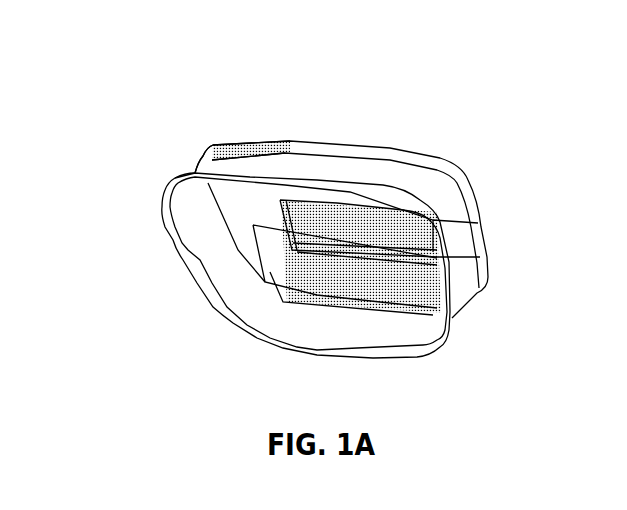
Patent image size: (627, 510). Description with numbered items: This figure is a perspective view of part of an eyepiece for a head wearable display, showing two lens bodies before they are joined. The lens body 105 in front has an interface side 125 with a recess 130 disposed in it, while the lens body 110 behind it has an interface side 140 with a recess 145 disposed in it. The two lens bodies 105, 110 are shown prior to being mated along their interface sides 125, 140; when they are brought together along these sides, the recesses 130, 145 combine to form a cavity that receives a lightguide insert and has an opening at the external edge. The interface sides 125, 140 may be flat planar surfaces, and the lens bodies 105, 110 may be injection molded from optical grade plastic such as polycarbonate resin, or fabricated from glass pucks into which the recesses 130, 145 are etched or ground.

The lens body 105 is at (395, 368).
The lens body 110 is at (445, 149).
The interface side 125 is at (186, 162).
The recess 130 is at (458, 283).
The interface side 140 is at (219, 160).
The recess 145 is at (467, 245).